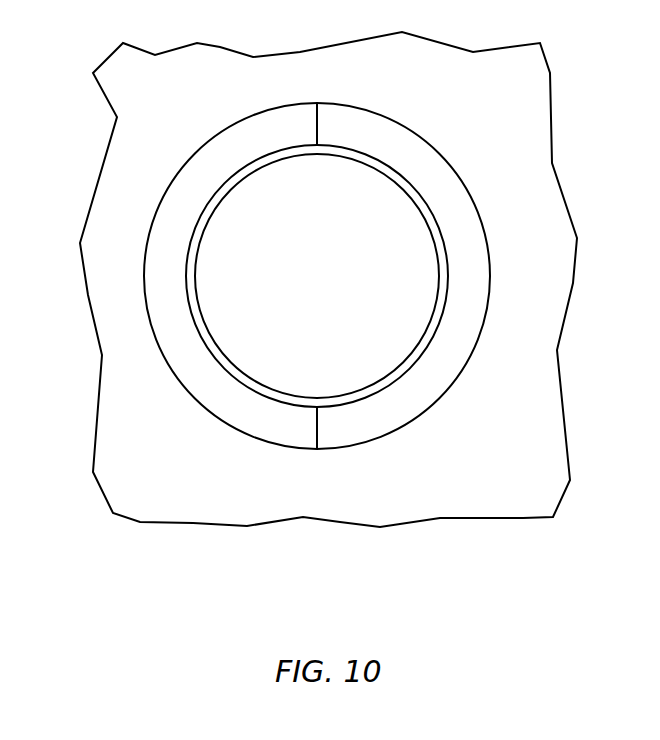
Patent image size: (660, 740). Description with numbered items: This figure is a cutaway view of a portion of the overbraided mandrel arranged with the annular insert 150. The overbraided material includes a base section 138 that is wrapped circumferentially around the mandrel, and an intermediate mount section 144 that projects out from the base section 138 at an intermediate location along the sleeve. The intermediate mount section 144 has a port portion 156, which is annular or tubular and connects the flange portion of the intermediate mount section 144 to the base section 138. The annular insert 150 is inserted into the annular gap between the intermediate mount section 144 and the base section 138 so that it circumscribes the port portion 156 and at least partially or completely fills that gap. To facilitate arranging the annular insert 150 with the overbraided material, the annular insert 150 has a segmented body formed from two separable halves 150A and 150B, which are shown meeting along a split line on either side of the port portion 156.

The base section 138 is at (343, 525).
The annular insert 150 is at (336, 261).
The separable half 150A is at (168, 185).
The separable half 150B is at (473, 202).
The intermediate mount section 144 is at (195, 312).
The port portion 156 is at (213, 217).